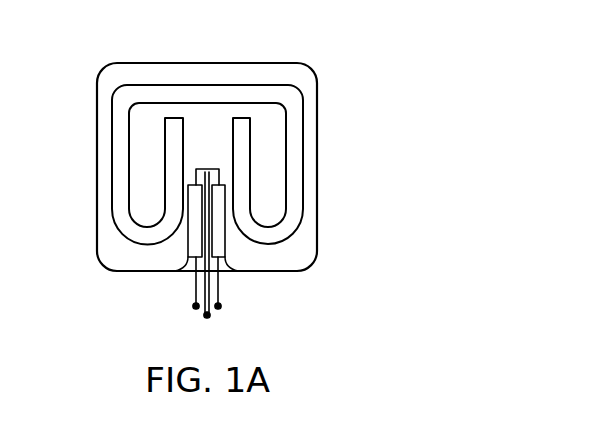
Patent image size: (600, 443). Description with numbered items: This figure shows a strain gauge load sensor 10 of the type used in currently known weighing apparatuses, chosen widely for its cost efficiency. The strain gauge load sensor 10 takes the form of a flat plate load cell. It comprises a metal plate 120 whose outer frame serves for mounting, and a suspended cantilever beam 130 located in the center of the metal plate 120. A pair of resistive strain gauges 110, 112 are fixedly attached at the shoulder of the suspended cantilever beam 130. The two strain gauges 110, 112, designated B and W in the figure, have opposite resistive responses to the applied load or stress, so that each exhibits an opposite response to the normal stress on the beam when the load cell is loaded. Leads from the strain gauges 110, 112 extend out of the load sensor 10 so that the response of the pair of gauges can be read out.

The strain gauge load sensor 10 is at (364, 64).
The metal plate 120 is at (307, 195).
The suspended cantilever beam 130 is at (293, 155).
The resistive strain gauge response designation W is at (195, 222).
The resistive strain gauge response designation B is at (220, 237).
The strain gauge 112 is at (180, 272).
The strain gauge 110 is at (233, 272).